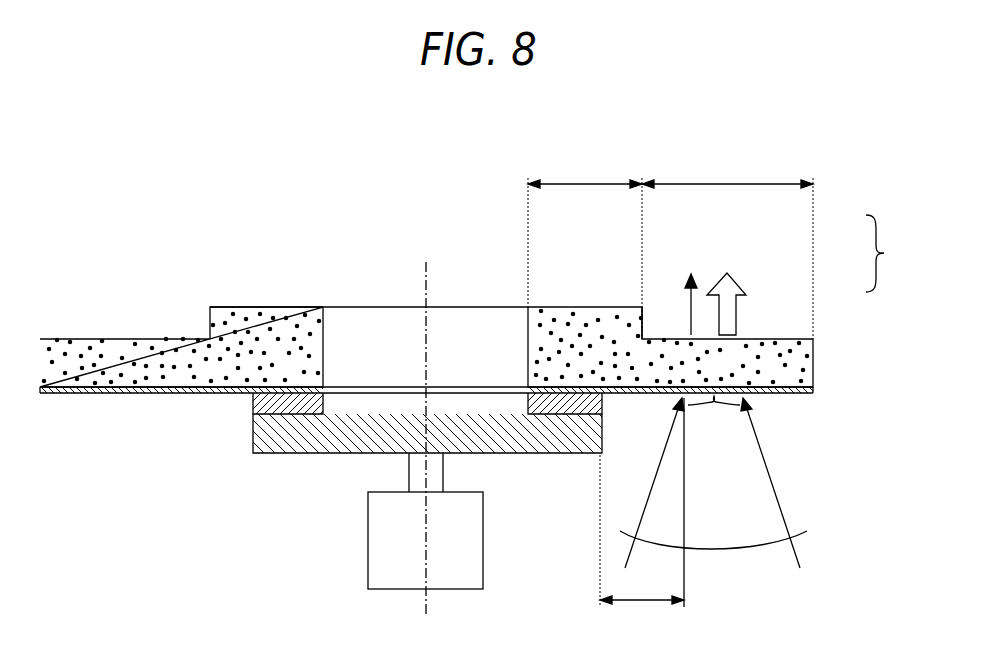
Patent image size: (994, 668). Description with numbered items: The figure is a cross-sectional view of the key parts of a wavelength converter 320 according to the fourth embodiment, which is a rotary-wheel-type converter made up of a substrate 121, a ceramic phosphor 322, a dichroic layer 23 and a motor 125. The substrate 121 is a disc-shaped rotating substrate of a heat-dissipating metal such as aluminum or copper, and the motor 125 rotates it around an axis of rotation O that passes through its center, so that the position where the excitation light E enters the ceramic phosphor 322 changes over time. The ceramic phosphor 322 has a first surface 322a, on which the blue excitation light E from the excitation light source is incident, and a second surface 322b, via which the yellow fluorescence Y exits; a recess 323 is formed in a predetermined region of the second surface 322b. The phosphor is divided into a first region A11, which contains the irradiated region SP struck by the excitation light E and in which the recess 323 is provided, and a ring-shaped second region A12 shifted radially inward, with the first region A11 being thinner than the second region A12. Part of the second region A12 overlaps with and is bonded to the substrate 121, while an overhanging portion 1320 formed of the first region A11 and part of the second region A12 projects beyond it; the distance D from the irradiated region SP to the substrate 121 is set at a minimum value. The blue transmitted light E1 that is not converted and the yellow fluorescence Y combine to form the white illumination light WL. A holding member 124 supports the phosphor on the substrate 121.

The wavelength converter 320 is at (484, 202).
The overhanging portion 1320 is at (171, 318).
The second surface 322b is at (228, 307).
The ceramic phosphor 322 is at (814, 356).
The recess 323 is at (644, 326).
The first surface 322a is at (52, 394).
The dichroic layer 23 is at (131, 394).
The holding member 124 is at (252, 406).
The substrate 121 is at (288, 449).
The motor 125 is at (474, 567).
The axis of rotation O is at (425, 262).
The second region A12 is at (670, 244).
The first region A11 is at (727, 168).
The blue light (transmitted light) E1 is at (695, 276).
The fluorescence Y is at (736, 287).
The illumination light WL is at (892, 253).
The excitation light E is at (807, 538).
The irradiated region SP is at (714, 419).
The distance D is at (642, 502).